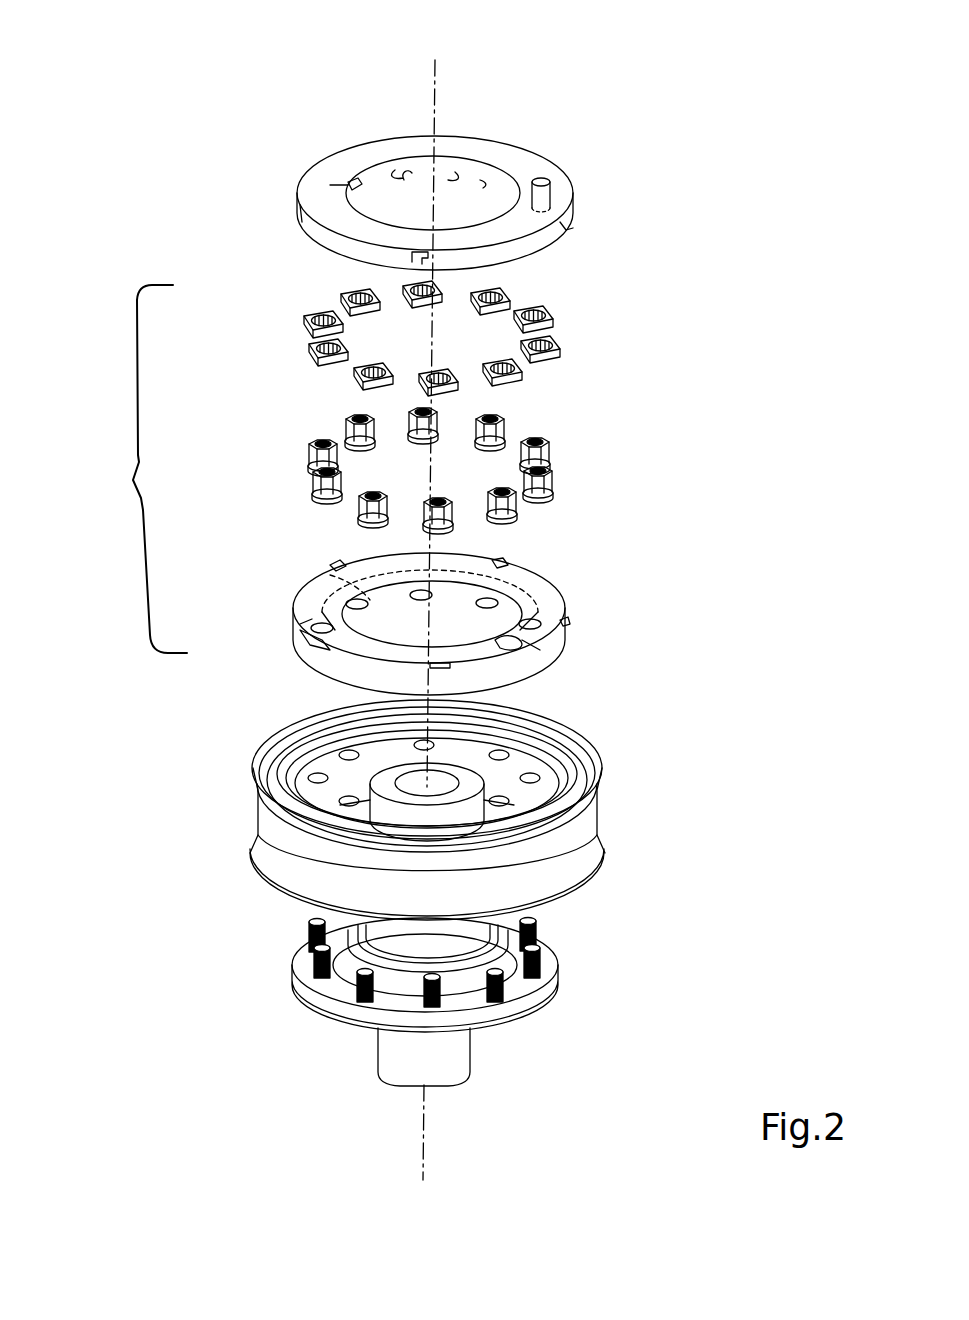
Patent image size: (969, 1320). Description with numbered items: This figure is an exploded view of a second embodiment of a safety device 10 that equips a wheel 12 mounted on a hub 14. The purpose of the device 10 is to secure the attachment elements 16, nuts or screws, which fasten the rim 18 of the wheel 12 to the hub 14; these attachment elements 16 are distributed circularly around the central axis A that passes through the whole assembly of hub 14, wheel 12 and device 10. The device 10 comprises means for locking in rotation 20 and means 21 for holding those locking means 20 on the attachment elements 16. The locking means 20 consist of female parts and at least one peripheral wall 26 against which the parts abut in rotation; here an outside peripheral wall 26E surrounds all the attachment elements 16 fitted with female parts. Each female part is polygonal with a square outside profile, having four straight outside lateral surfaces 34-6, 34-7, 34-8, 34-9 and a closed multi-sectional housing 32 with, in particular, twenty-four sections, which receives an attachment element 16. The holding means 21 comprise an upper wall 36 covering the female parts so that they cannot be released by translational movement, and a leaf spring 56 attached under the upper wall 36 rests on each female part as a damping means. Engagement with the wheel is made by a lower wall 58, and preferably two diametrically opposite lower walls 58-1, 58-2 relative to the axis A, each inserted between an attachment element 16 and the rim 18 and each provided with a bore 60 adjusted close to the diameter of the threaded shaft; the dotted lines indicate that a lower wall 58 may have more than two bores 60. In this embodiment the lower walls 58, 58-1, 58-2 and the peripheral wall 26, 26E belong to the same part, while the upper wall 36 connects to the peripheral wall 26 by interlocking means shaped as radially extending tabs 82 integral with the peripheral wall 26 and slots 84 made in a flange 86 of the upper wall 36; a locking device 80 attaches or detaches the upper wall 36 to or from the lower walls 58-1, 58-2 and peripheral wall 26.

The safety device 10 is at (145, 124).
The wheel 12 is at (278, 842).
The hub 14 is at (313, 1000).
The attachment elements 16 is at (525, 412).
The rim 18 is at (590, 838).
The means for locking in rotation 20 is at (144, 469).
The means for holding 21 is at (346, 172).
The peripheral wall 26 is at (560, 661).
The outside peripheral wall 26E is at (318, 634).
The closed and multi-sectional housing 32 is at (548, 316).
The straight outside lateral surface 34-6 is at (530, 312).
The straight outside lateral surface 34-7 is at (680, 348).
The straight outside lateral surface 34-8 is at (552, 325).
The straight outside lateral surface 34-9 is at (515, 308).
The upper wall 36 is at (513, 165).
The leaf spring 56 is at (412, 165).
The lower wall 58 is at (372, 592).
The lower wall 58-1 is at (320, 642).
The lower wall 58-2 is at (505, 655).
The bore 60 is at (548, 586).
The locking device 80 is at (541, 178).
The tabs 82 is at (505, 560).
The slots 84 is at (412, 274).
The flange 86 is at (318, 232).
The axis A is at (425, 1128).